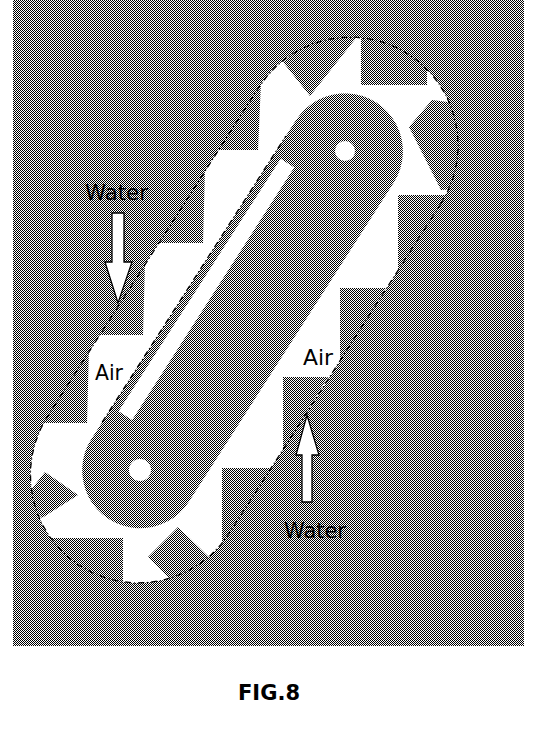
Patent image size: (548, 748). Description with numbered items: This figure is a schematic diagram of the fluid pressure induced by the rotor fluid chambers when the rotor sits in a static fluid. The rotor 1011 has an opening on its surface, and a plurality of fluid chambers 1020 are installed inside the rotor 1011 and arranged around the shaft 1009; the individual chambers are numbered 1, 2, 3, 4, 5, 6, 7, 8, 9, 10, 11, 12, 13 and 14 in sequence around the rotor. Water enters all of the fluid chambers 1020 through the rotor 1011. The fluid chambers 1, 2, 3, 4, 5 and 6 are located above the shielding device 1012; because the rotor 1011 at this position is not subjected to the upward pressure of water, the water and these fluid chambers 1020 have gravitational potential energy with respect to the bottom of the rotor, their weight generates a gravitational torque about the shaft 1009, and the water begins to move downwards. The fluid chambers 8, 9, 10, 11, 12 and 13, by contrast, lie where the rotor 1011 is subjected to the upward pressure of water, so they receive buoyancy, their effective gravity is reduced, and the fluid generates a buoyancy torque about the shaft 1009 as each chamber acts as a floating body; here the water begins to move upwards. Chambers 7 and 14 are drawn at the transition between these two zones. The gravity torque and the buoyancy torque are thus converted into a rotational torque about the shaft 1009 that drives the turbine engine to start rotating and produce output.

The fluid chamber 1 is at (321, 64).
The fluid chamber 2 is at (238, 121).
The fluid chamber 3 is at (181, 207).
The fluid chamber 4 is at (121, 298).
The fluid chamber 5 is at (66, 384).
The fluid chamber 6 is at (50, 495).
The fluid chamber 7 is at (80, 562).
The fluid chamber 8 is at (180, 555).
The fluid chamber 9 is at (247, 510).
The fluid chamber 10 is at (305, 414).
The fluid chamber 11 is at (363, 327).
The fluid chamber 12 is at (424, 233).
The fluid chamber 13 is at (440, 145).
The fluid chamber 14 is at (394, 53).
The shaft 1009 is at (341, 158).
The rotor 1011 is at (134, 280).
The shielding device 1012 is at (220, 266).
The fluid chambers 1020 is at (310, 60).